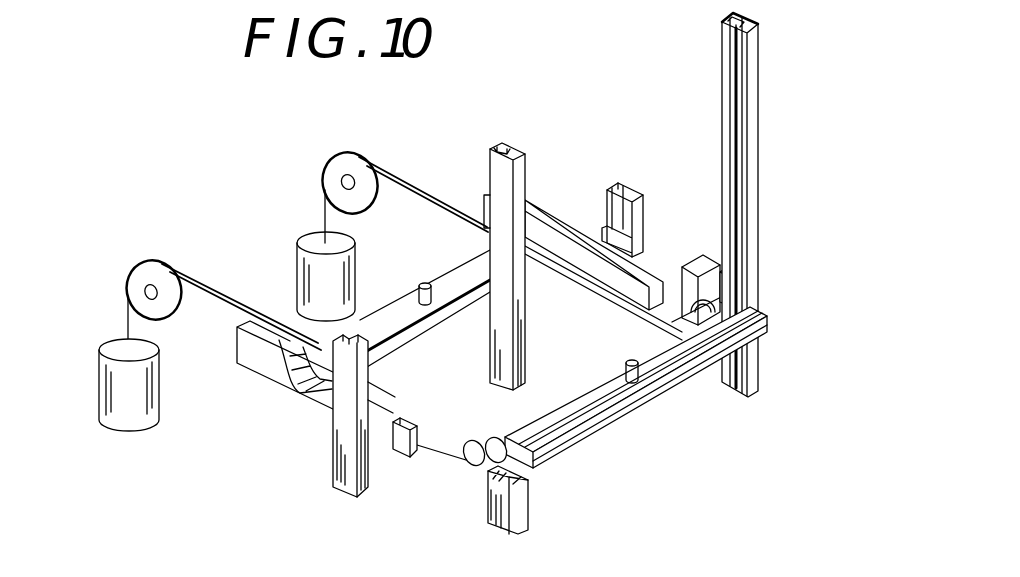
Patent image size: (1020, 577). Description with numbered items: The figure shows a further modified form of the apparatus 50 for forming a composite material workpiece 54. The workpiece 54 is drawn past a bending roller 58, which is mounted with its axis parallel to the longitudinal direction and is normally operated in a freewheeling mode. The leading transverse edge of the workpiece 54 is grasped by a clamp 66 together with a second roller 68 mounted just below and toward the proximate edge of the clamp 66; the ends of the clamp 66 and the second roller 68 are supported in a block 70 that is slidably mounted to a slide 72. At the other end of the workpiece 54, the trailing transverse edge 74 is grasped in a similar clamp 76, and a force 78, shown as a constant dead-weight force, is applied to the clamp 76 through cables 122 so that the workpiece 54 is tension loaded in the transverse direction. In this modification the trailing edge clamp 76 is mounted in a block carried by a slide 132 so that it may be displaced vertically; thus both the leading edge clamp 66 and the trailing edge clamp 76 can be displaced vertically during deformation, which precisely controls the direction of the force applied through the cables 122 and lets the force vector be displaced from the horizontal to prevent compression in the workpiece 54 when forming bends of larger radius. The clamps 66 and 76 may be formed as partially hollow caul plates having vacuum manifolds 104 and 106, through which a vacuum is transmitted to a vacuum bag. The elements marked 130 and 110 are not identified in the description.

The apparatus 50 is at (234, 178).
The composite material workpiece 54 is at (400, 440).
The bending roller 58 is at (471, 444).
The clamp 66 is at (566, 447).
The second roller 68 is at (495, 463).
The block 70 is at (752, 292).
The slide 72 is at (759, 138).
The trailing transverse edge 74 is at (526, 344).
The clamp 76 is at (320, 336).
The force 78 is at (106, 390).
The vacuum manifold 104 is at (641, 375).
The vacuum manifold 106 is at (418, 290).
The plate 110 is at (768, 308).
The cables 122 is at (208, 290).
The cross beam 130 is at (250, 372).
The slide 132 is at (333, 464).